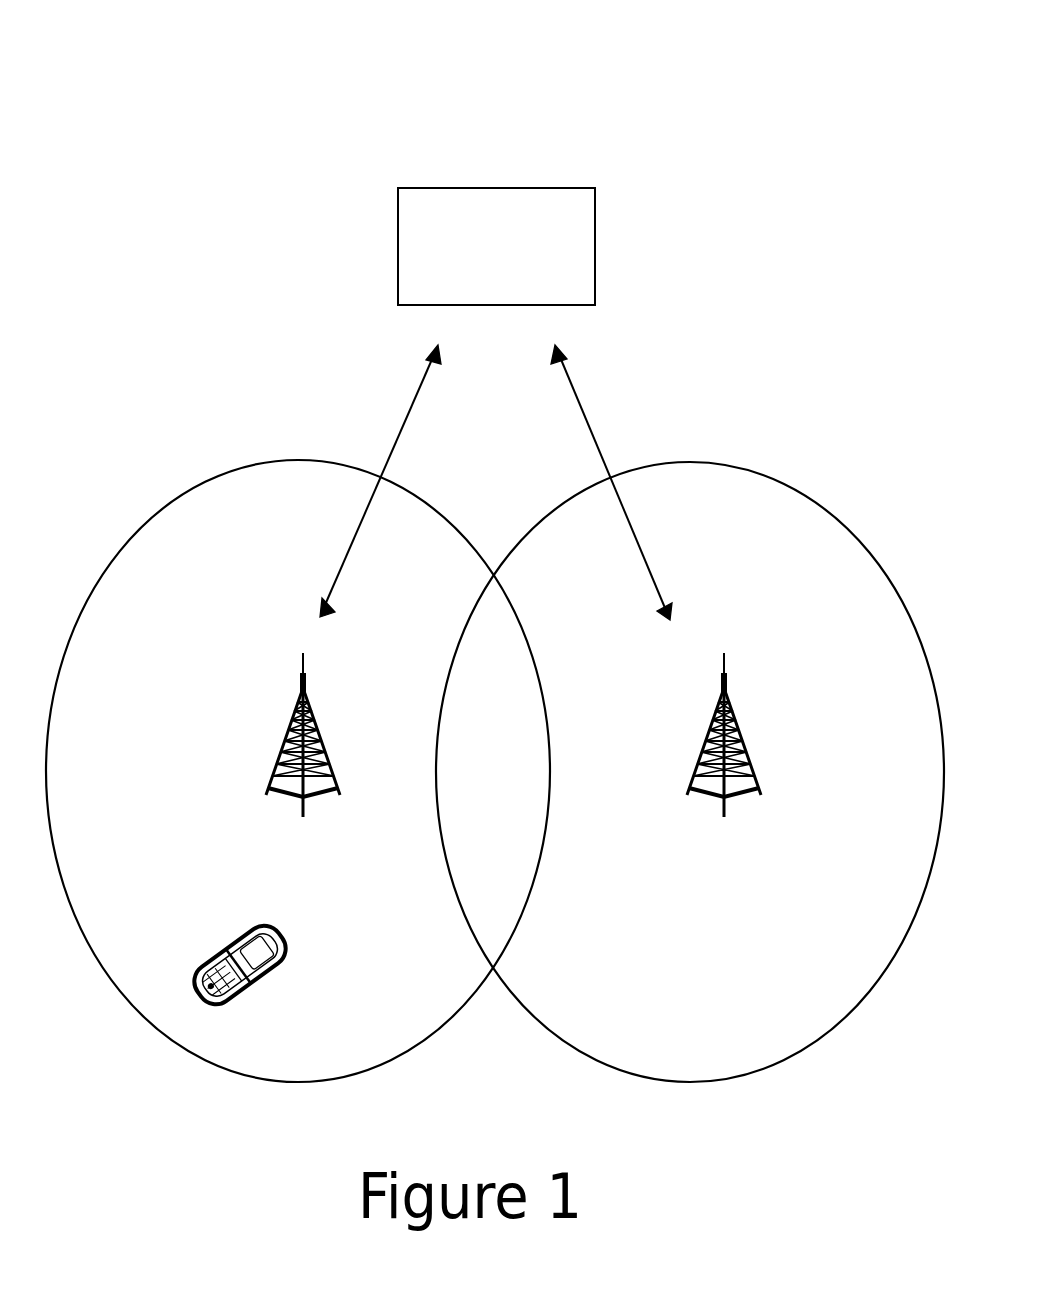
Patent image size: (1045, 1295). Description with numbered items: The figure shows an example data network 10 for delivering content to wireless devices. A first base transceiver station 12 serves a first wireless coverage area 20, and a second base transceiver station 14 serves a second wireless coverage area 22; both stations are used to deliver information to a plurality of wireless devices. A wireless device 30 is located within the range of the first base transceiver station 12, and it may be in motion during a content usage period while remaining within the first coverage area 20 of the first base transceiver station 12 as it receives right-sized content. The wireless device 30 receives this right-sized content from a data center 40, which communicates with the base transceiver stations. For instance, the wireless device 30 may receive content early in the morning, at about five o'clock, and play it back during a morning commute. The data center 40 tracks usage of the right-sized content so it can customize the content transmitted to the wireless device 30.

The data network 10 is at (790, 111).
The first base transceiver station 12 is at (303, 817).
The second base transceiver station 14 is at (724, 817).
The first wireless coverage area 20 is at (305, 461).
The second wireless coverage area 22 is at (697, 463).
The wireless device 30 is at (203, 977).
The data center 40 is at (478, 188).